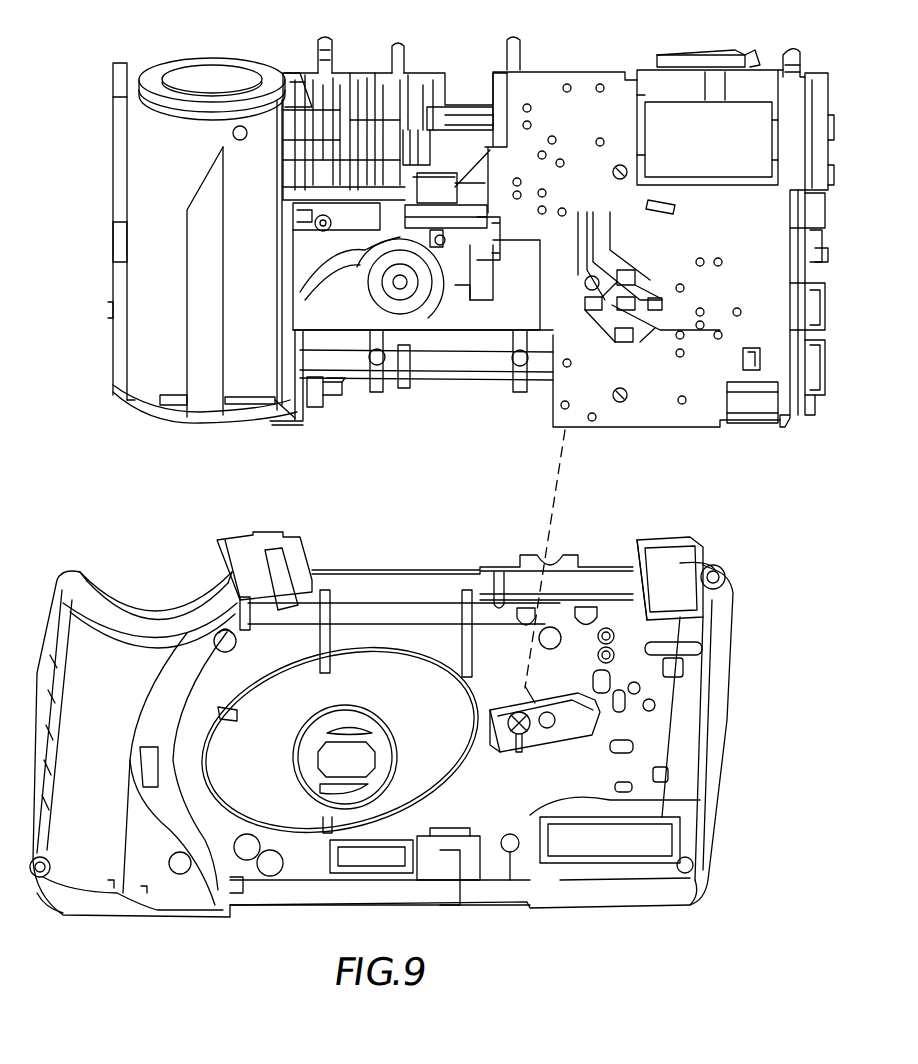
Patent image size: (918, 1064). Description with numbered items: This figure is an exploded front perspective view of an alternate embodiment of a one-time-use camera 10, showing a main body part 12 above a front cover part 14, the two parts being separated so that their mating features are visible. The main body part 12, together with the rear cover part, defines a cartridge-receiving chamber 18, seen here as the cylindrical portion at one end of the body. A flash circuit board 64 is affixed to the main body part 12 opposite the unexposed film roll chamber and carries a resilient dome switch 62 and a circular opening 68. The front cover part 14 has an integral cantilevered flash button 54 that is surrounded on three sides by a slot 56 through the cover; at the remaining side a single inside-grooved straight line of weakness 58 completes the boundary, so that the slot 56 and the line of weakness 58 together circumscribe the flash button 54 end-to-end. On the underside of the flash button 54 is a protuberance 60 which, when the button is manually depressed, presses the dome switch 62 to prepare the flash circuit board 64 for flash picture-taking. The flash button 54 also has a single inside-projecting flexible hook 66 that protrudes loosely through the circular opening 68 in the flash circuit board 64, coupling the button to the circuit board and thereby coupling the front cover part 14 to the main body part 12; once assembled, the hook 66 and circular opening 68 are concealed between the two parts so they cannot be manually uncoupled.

The one-time-use camera 10 is at (98, 418).
The main body part 12 is at (100, 176).
The front cover part 14 is at (34, 682).
The cartridge-receiving chamber 18 is at (140, 272).
The flash button 54 is at (530, 742).
The slot 56 is at (545, 702).
The line of weakness 58 is at (475, 729).
The protuberance 60 is at (523, 687).
The dome switch 62 is at (638, 313).
The flash circuit board 64 is at (768, 293).
The flexible hook 66 is at (495, 748).
The circular opening 68 is at (582, 288).